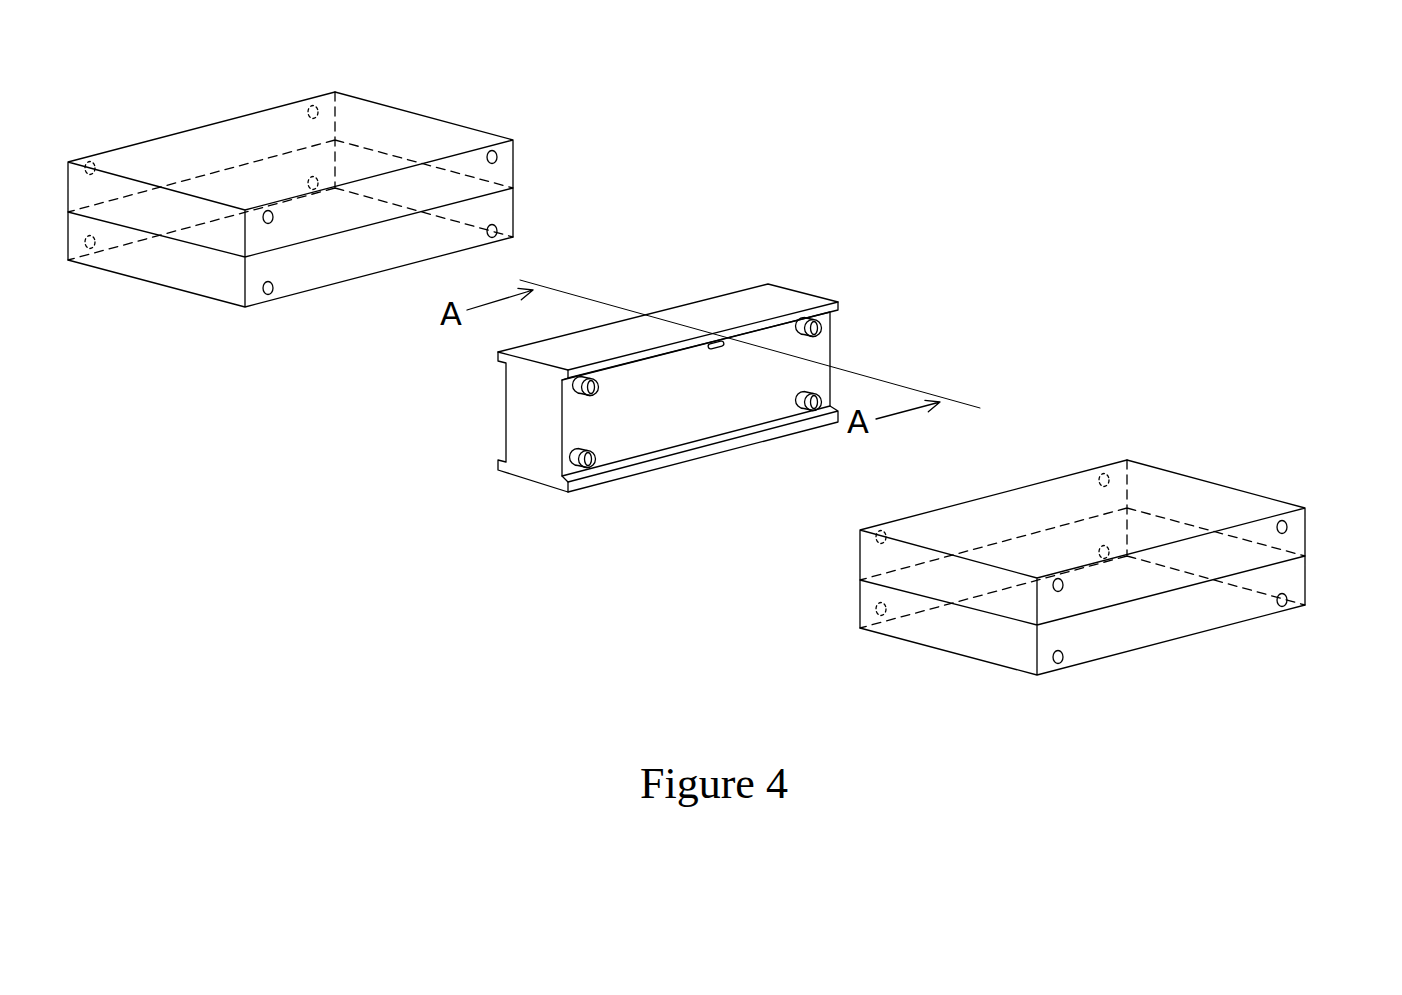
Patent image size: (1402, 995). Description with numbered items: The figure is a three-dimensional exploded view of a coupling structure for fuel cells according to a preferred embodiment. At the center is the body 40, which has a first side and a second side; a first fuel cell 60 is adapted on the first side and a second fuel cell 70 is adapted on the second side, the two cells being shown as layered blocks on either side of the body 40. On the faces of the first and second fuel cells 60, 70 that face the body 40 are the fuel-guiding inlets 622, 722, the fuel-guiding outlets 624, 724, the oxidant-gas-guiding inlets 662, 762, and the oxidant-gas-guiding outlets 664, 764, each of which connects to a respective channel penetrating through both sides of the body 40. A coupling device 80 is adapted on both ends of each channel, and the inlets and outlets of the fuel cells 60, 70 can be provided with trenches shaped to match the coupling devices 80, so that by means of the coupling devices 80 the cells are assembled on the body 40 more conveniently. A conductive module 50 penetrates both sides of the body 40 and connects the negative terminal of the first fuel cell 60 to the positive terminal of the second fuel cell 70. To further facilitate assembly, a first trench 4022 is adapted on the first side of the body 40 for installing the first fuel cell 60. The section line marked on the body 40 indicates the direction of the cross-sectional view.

The second fuel cell 70 is at (497, 60).
The fuel-guiding inlet 722 is at (498, 155).
The oxidant-gas-guiding inlet 762 is at (500, 229).
The fuel-guiding outlet 724 is at (277, 215).
The oxidant-gas-guiding outlet 764 is at (277, 290).
The body 40 is at (802, 355).
The first trench 4022 is at (657, 420).
The conductive module 50 is at (718, 352).
The coupling device 80 is at (572, 384).
The first fuel cell 60 is at (1240, 650).
The fuel-guiding inlet 622 is at (1107, 473).
The oxidant-gas-guiding inlet 662 is at (1103, 547).
The fuel-guiding outlet 624 is at (885, 532).
The oxidant-gas-guiding outlet 664 is at (886, 606).